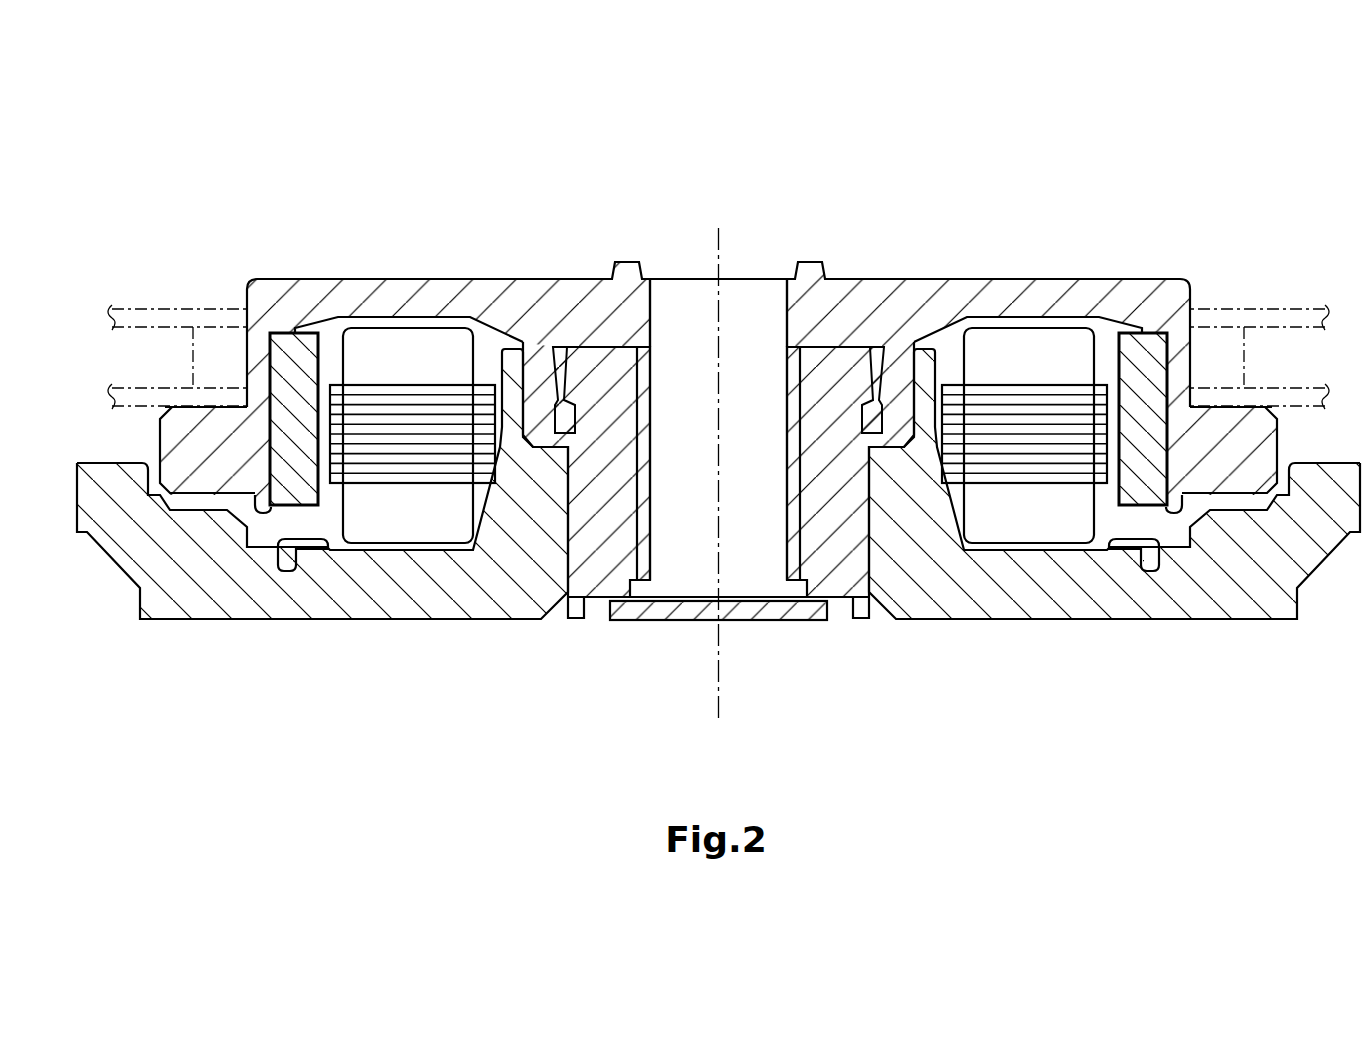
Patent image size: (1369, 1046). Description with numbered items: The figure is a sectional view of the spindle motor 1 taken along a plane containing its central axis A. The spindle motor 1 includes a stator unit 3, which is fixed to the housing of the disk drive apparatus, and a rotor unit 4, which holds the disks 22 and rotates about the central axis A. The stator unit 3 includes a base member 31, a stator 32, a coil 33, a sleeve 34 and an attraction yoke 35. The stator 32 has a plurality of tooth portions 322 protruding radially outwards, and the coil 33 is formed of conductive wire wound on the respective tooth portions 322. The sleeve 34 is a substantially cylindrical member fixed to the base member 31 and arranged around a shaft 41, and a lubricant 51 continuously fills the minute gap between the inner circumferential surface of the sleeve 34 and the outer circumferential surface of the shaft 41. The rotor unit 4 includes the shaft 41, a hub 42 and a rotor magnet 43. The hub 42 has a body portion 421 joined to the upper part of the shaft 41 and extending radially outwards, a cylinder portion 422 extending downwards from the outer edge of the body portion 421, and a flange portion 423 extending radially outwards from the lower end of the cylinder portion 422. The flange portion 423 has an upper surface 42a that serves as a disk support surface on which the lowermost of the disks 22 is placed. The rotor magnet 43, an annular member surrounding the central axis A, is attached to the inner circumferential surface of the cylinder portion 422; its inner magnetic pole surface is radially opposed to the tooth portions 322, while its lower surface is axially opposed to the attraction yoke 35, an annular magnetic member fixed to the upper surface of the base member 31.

The spindle motor 1 is at (283, 200).
The stator unit 3 is at (1280, 636).
The base member 31 is at (1188, 610).
The stator 32 is at (1033, 545).
The tooth portions 322 is at (383, 460).
The coil 33 is at (445, 528).
The sleeve 34 is at (837, 540).
The attraction yoke 35 is at (1130, 572).
The lubricant 51 is at (555, 383).
The rotor unit 4 is at (1036, 230).
The shaft 41 is at (752, 297).
The hub 42 is at (1258, 218).
The body portion 421 is at (1103, 295).
The cylinder portion 422 is at (1176, 367).
The flange portion 423 is at (1233, 433).
The upper surface 42a is at (230, 400).
The rotor magnet 43 is at (283, 340).
The disks 22 is at (148, 305).
The central axis A is at (717, 460).